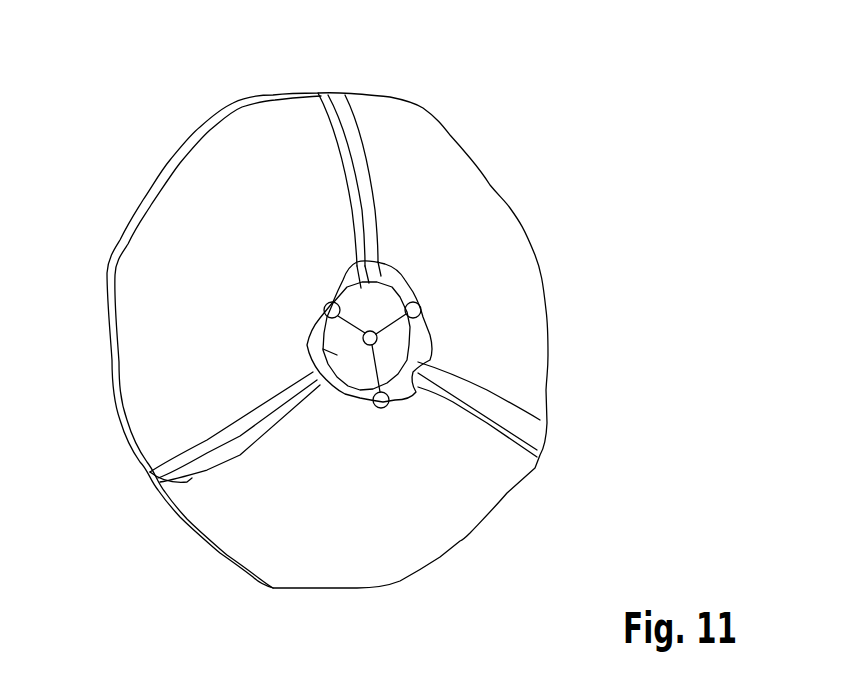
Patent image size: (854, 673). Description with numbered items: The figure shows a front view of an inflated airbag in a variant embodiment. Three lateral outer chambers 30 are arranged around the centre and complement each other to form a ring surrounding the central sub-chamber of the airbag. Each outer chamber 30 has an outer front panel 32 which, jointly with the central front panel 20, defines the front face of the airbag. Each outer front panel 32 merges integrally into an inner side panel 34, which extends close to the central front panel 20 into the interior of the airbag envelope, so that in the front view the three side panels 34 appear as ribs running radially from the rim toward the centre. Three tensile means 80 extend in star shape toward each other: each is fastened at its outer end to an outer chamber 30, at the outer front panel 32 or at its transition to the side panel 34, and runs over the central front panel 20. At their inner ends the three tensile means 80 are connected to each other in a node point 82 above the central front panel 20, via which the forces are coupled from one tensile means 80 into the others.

The lateral outer chamber 30 is at (167, 230).
The outer front panel 32 is at (204, 192).
The inner side panel 34 is at (345, 117).
The tensile means 80 is at (332, 322).
The central front panel 20 is at (312, 360).
The node point 82 is at (362, 355).